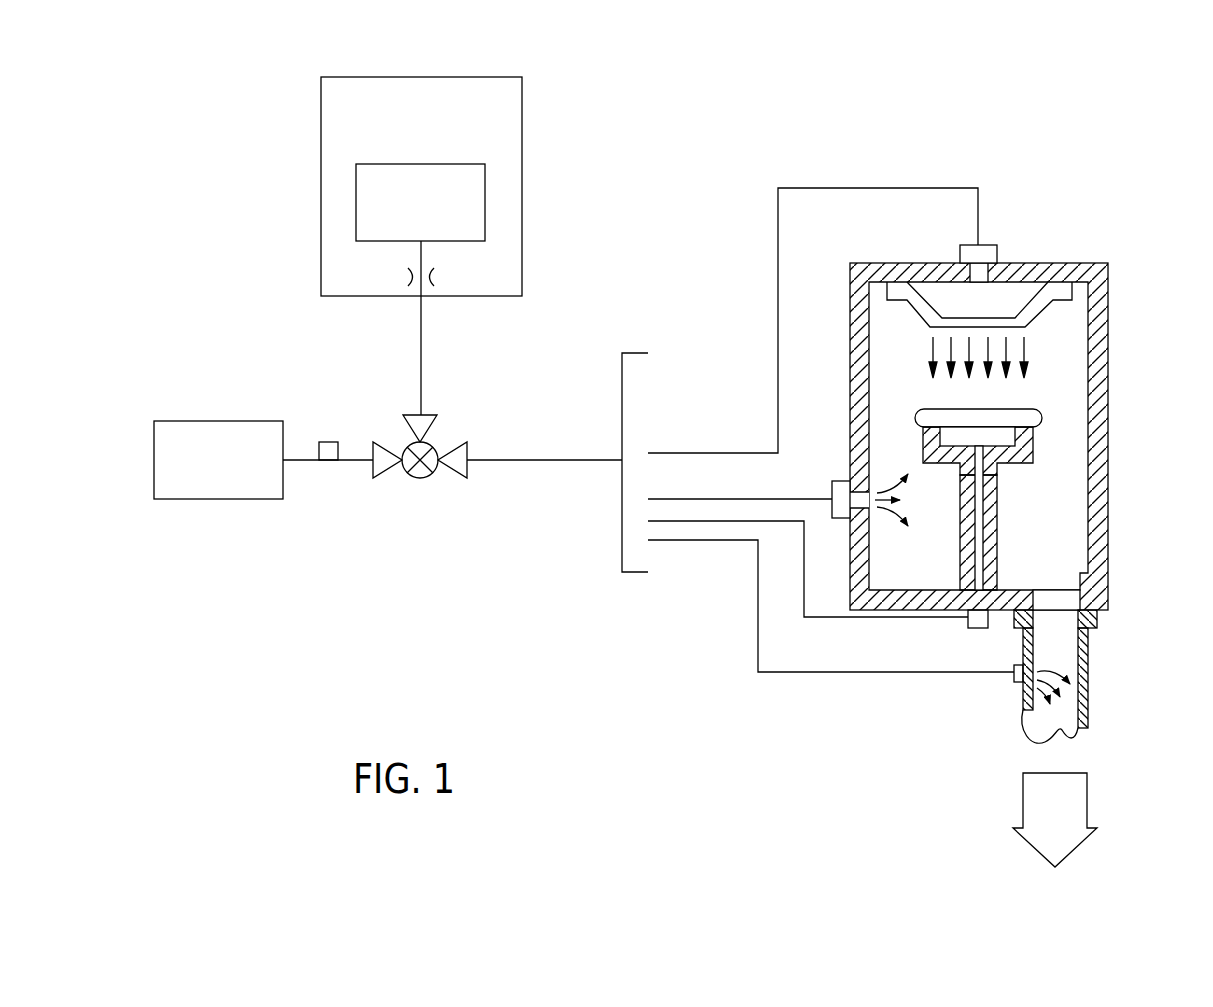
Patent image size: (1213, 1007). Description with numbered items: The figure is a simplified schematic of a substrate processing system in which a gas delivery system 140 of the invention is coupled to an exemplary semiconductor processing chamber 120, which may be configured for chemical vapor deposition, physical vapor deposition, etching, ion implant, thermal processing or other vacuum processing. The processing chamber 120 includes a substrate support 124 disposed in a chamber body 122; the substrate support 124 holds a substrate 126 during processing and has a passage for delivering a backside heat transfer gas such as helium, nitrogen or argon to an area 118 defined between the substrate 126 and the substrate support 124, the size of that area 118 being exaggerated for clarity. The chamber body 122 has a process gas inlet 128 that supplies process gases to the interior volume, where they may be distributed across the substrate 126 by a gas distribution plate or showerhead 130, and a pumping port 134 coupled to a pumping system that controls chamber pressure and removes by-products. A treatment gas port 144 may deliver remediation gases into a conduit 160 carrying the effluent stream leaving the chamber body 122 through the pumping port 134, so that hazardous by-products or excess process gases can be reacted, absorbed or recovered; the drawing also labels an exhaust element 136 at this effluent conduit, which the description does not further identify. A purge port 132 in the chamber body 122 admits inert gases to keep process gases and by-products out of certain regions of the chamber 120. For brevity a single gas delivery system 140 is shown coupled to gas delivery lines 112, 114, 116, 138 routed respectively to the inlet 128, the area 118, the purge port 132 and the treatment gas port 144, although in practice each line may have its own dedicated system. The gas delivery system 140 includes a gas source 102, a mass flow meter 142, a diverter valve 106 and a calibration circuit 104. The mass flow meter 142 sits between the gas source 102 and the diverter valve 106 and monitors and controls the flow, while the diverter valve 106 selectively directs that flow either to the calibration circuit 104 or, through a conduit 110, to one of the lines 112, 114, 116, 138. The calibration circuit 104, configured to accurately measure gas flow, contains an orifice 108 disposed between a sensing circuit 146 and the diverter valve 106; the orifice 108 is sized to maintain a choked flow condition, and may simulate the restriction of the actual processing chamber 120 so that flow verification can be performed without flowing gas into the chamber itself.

The gas source 102 is at (206, 421).
The calibration circuit 104 is at (453, 75).
The diverter valve 106 is at (417, 480).
The orifice 108 is at (448, 278).
The conduit 110 is at (543, 462).
The gas delivery line 112 is at (778, 362).
The gas delivery line 114 is at (710, 499).
The gas delivery line 116 is at (832, 618).
The area 118 is at (998, 440).
The processing chamber 120 is at (1040, 195).
The chamber body 122 is at (1095, 403).
The substrate support 124 is at (1000, 515).
The substrate 126 is at (1045, 412).
The process gas inlet 128 is at (970, 270).
The showerhead 130 is at (1045, 310).
The purge port 132 is at (857, 492).
The pumping port 134 is at (1060, 593).
The exhaust conduit 136 is at (1080, 698).
The gas delivery line 138 is at (897, 673).
The gas delivery system 140 is at (272, 111).
The mass flow meter 142 is at (330, 442).
The treatment gas port 144 is at (1037, 655).
The sensing circuit 146 is at (486, 201).
The conduit 160 is at (1023, 697).